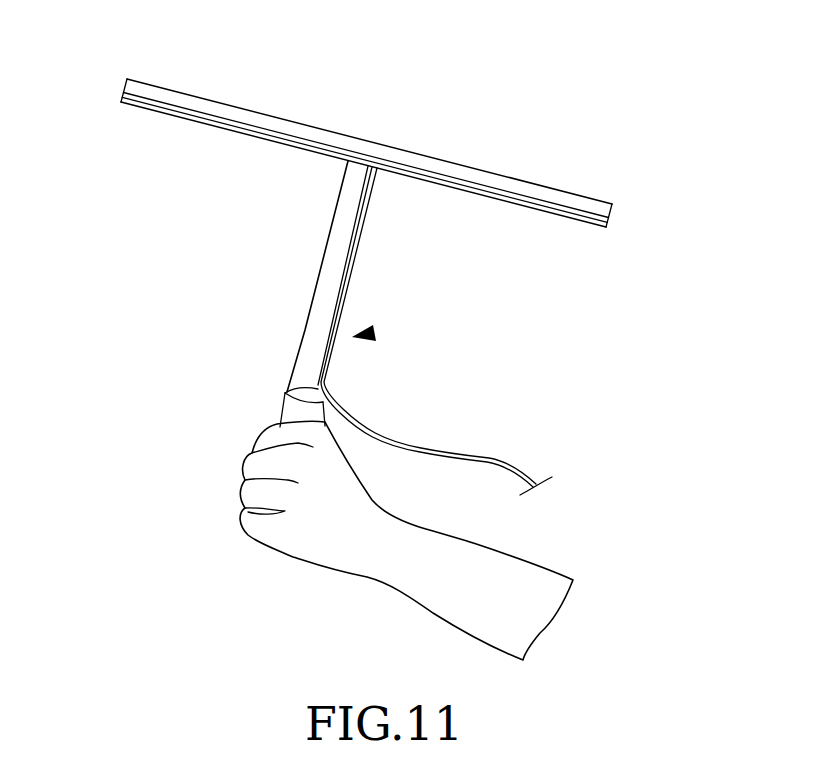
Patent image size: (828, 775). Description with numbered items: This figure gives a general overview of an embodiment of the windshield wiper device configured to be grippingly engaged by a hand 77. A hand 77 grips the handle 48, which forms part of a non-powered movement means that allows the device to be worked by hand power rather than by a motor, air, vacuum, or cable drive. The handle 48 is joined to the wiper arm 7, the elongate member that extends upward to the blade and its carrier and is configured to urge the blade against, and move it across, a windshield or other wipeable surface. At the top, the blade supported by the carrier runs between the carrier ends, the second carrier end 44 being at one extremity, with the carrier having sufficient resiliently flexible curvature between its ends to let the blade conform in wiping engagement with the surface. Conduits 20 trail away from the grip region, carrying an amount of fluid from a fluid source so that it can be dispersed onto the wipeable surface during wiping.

The second carrier end 44 is at (120, 102).
The wiper arm 7 is at (325, 268).
The handle 48 is at (374, 333).
The conduits 20 is at (455, 456).
The hand 77 is at (322, 542).